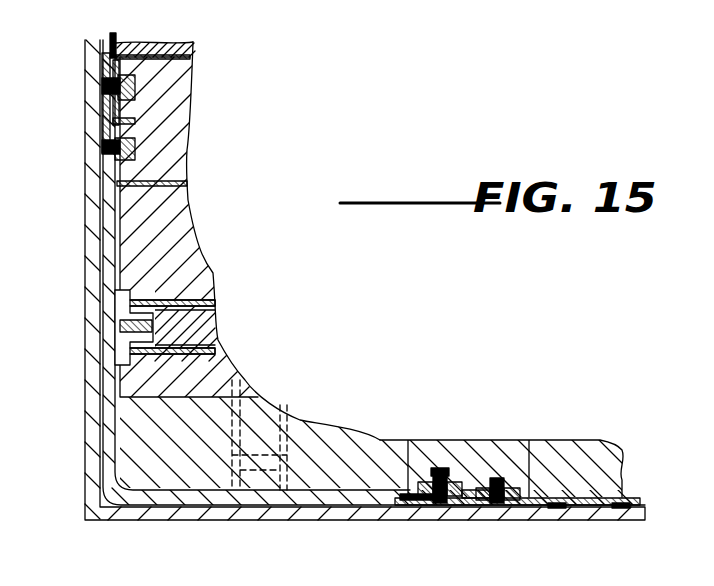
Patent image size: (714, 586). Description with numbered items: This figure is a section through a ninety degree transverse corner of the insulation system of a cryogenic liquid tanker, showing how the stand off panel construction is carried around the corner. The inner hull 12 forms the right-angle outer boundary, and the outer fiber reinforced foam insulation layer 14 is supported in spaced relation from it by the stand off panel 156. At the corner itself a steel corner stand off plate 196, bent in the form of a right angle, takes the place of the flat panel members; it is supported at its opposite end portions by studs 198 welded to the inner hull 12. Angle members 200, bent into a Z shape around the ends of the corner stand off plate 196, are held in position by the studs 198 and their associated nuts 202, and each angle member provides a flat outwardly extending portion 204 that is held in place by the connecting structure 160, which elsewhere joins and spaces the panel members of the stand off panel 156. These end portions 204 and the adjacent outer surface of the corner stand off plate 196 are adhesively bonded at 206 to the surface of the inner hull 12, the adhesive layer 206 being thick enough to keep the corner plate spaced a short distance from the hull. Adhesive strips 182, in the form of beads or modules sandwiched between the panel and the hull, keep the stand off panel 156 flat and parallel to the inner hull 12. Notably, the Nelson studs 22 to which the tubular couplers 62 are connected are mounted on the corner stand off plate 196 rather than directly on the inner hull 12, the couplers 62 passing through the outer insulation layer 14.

The inner hull 12 is at (333, 525).
The outer fiber reinforced foam insulation layer 14 is at (618, 460).
The studs 22 is at (112, 328).
The coupler 62 is at (200, 290).
The stand off panel 156 is at (110, 34).
The connecting structure 160 is at (145, 83).
The adhesive strips 182 is at (560, 512).
The corner stand off plate 196 is at (170, 495).
The studs 198 is at (104, 148).
The angle members 200 is at (112, 125).
The nuts 202 is at (434, 468).
The flat outwardly extending portion 204 is at (483, 505).
The adhesive layer 206 is at (104, 100).